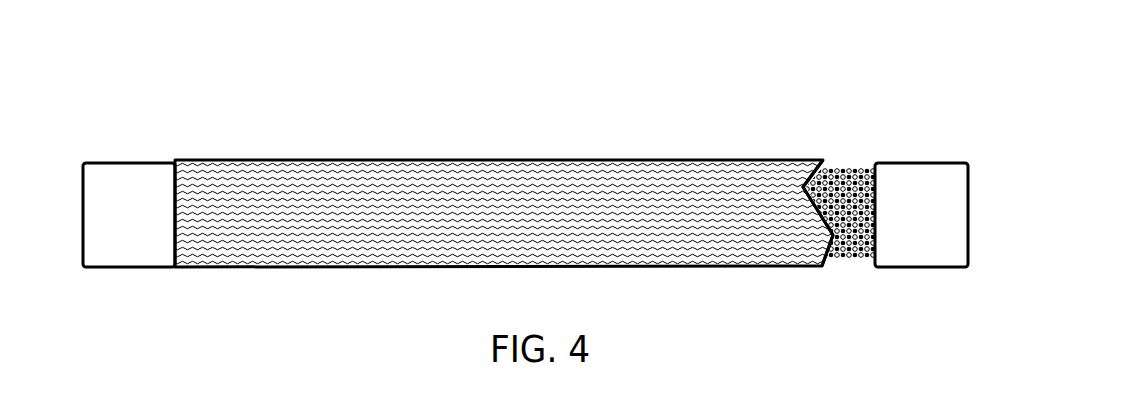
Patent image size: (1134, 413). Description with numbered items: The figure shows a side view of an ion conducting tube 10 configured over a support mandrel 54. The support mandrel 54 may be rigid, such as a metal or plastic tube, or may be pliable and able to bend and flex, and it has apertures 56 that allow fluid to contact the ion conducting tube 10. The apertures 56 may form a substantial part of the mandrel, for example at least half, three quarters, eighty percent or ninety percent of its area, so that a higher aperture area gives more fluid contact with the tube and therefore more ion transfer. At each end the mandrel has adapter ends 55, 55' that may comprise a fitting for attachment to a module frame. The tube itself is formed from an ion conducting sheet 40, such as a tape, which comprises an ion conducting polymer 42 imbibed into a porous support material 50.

The ion conducting tube 10 is at (660, 153).
The ion conducting sheet 40 is at (362, 180).
The ion conducting polymer 42 is at (467, 167).
The support material 50 is at (565, 178).
The support mandrel 54 is at (852, 167).
The adapter end 55 is at (129, 162).
The adapter end 55' is at (921, 156).
The apertures 56 is at (803, 160).